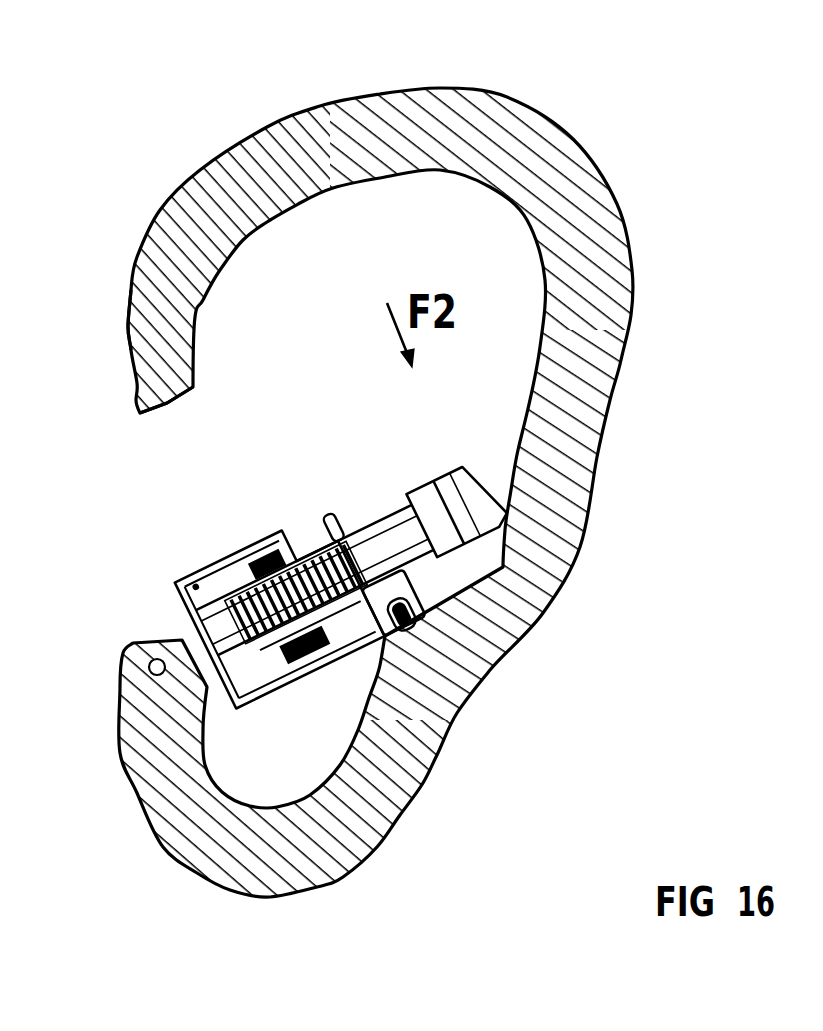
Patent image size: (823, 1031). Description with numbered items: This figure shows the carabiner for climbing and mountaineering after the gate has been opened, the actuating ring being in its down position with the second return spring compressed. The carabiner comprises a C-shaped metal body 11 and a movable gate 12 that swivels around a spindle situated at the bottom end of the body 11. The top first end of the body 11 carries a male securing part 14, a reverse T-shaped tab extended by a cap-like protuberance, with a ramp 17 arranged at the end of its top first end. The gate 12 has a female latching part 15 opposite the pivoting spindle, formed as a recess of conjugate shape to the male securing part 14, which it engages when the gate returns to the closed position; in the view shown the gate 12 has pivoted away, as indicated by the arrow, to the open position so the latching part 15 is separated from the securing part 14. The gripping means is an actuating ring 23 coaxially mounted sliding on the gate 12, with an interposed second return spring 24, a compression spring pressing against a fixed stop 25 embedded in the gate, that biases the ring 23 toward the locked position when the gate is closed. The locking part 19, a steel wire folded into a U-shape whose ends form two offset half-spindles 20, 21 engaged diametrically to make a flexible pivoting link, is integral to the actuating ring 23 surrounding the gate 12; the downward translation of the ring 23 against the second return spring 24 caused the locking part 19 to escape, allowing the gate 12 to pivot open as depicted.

The C-shaped metal body 11 is at (411, 515).
The movable gate 12 is at (248, 811).
The male securing part 14 is at (160, 369).
The female latching part 15 is at (351, 529).
The ramp 17 is at (200, 422).
The locking part 19 is at (359, 495).
The offset half-spindle 20 is at (330, 796).
The offset half-spindle 21 is at (443, 811).
The actuating ring 23 is at (208, 609).
The second return spring 24 is at (302, 517).
The fixed stop 25 is at (158, 513).